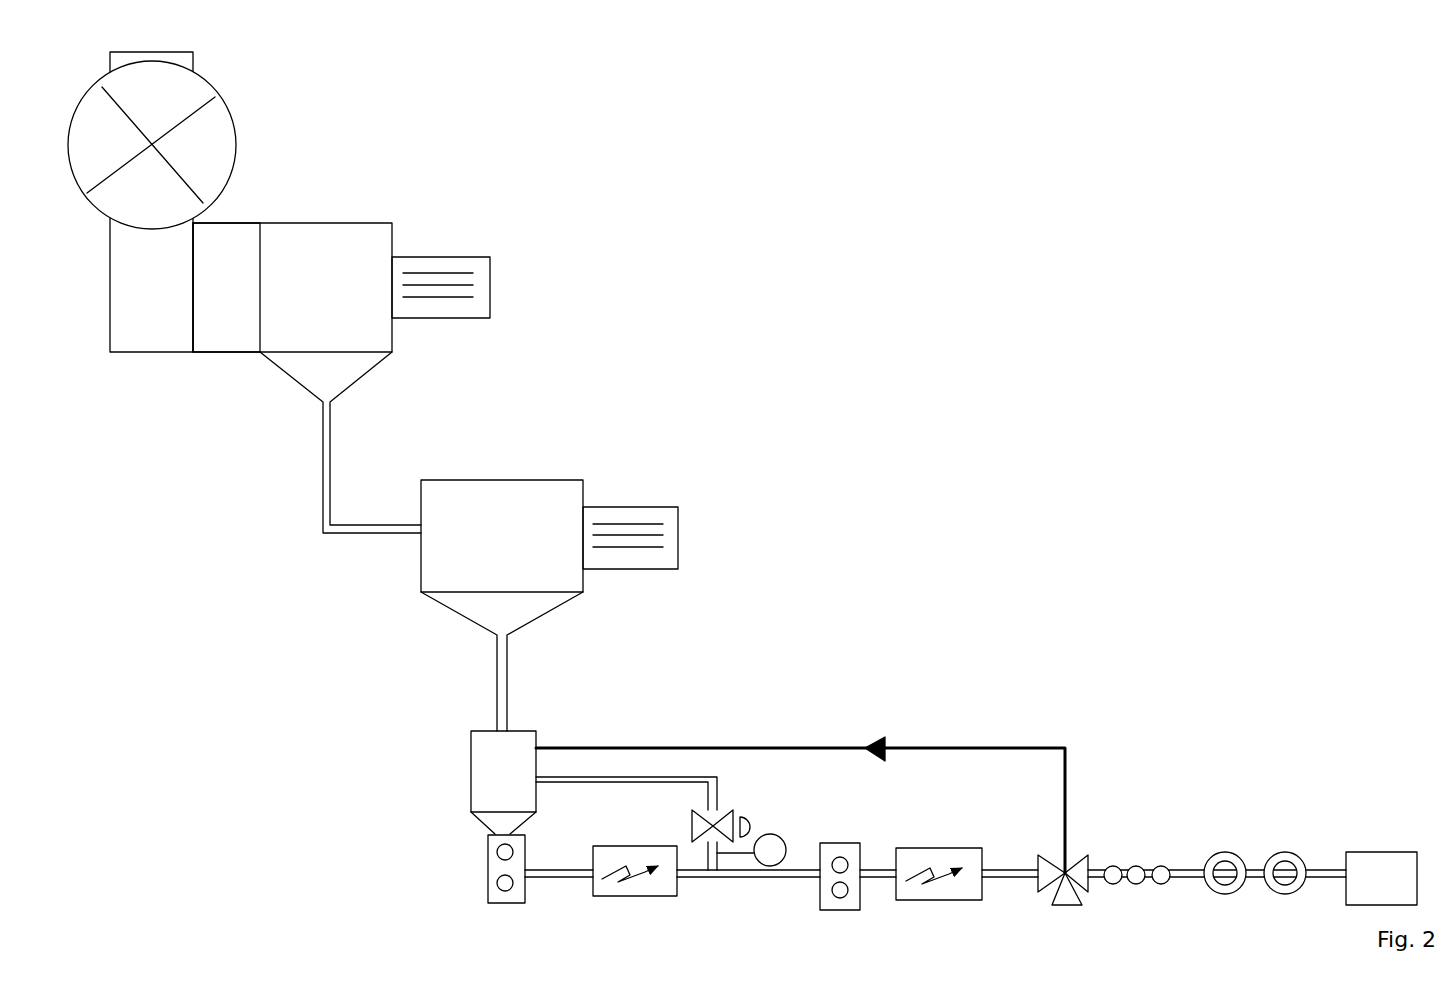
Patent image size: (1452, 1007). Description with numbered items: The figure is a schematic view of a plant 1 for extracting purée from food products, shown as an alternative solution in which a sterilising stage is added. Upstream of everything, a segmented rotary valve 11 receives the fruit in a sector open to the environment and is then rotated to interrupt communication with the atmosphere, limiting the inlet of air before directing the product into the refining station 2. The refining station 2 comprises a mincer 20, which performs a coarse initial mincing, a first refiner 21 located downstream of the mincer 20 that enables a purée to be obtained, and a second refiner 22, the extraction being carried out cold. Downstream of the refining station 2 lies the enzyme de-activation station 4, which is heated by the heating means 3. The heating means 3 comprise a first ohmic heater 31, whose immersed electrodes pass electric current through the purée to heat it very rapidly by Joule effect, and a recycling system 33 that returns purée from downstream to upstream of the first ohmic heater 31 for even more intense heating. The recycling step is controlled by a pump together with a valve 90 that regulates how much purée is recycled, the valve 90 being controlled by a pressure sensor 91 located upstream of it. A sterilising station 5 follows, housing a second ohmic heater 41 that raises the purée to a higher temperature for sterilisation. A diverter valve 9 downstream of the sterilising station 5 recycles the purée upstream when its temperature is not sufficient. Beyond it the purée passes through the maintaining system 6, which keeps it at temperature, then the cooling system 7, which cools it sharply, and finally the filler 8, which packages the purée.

The plant 1 is at (972, 377).
The refining station 2 is at (562, 415).
The segmented rotary valve 11 is at (236, 108).
The mincer 20 is at (247, 247).
The first refiner 21 is at (341, 319).
The second refiner 22 is at (600, 478).
The heating means 3 is at (703, 752).
The enzyme de-activation station 4 is at (582, 765).
The first ohmic heater 31 is at (643, 842).
The recycling system 33 is at (733, 782).
The valve 90 is at (744, 803).
The pressure sensor 91 is at (779, 832).
The second ohmic heater 41 is at (953, 840).
The sterilising station 5 is at (944, 791).
The diverter valve 9 is at (1085, 856).
The maintaining system 6 is at (1150, 865).
The cooling system 7 is at (1275, 833).
The filler 8 is at (1374, 848).